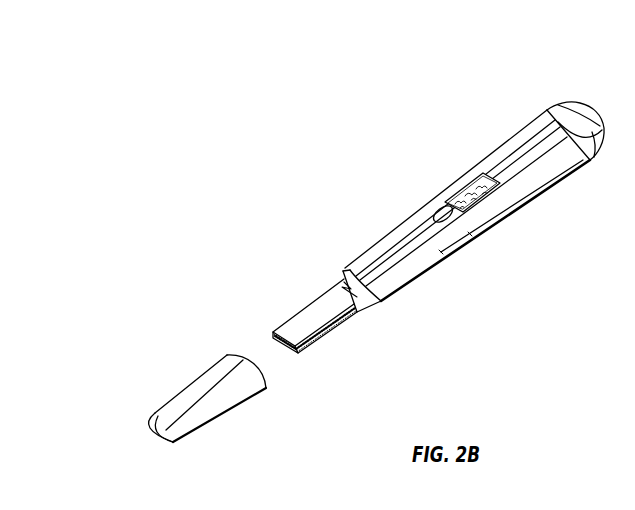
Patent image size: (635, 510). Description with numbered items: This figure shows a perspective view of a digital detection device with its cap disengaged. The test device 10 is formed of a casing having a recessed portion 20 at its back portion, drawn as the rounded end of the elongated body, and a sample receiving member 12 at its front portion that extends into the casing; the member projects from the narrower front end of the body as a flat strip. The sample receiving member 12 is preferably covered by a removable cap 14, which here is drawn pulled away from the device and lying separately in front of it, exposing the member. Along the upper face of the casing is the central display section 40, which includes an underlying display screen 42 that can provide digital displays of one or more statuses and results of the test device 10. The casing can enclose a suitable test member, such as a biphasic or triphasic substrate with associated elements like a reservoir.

The test device 10 is at (267, 119).
The sample receiving member 12 is at (300, 325).
The removable cap 14 is at (210, 380).
The recessed portion 20 is at (560, 124).
The central display section 40 is at (453, 198).
The display screen 42 is at (478, 174).